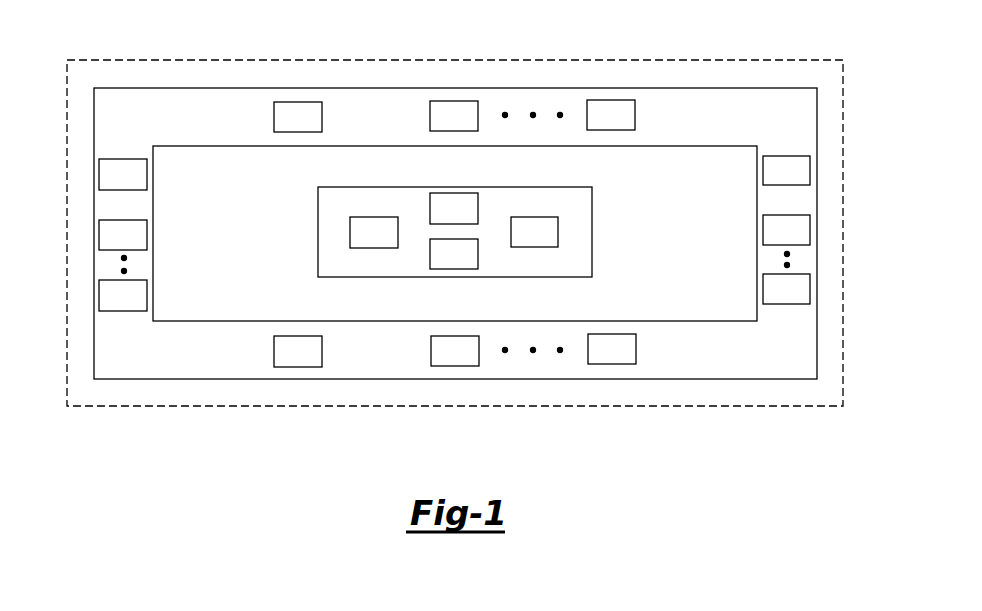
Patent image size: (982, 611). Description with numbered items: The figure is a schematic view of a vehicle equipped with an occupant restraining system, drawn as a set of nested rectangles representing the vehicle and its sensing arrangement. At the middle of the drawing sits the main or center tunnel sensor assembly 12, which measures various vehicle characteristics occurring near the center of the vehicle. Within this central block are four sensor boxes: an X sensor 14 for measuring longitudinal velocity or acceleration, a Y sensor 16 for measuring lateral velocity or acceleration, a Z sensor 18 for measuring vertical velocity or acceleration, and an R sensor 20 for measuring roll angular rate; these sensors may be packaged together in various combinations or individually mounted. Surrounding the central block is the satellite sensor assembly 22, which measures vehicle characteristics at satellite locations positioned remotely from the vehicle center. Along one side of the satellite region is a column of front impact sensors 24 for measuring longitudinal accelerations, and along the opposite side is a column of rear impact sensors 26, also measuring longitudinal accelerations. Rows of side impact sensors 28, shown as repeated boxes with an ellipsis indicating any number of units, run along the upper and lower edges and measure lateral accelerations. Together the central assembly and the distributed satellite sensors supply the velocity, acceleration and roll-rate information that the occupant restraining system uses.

The center tunnel sensor assembly 12 is at (592, 253).
The X sensor 14 is at (455, 193).
The Y sensor 16 is at (558, 232).
The Z sensor 18 is at (350, 233).
The R sensor 20 is at (478, 253).
The satellite sensor assembly 22 is at (735, 362).
The front impact sensor 24 is at (810, 170).
The rear impact sensor 26 is at (99, 175).
The side impact sensors 28 is at (611, 100).